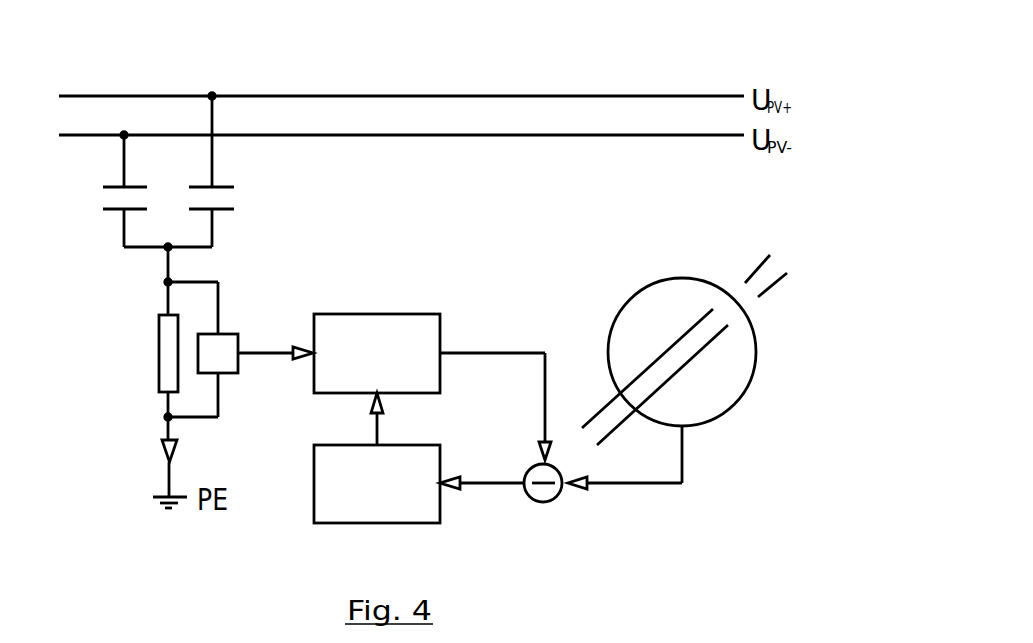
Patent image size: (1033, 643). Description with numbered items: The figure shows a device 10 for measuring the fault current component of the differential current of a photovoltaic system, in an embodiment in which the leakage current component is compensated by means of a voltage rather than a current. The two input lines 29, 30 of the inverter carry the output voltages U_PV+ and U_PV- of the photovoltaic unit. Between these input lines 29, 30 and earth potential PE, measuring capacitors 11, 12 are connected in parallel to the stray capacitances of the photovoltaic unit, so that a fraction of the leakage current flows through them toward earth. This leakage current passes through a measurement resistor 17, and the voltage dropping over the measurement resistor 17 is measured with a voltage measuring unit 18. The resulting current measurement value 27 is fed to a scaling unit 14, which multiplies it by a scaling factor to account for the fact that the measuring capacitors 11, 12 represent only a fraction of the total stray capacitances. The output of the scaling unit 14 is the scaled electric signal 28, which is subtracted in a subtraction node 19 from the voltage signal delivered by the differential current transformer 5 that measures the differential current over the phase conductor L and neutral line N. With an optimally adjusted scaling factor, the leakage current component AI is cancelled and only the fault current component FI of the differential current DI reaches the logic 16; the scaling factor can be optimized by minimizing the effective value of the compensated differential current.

The differential current transformer 5 is at (732, 410).
The device for measuring the fault current component of the differential current 10 is at (485, 243).
The measuring capacitor 11 is at (115, 210).
The measuring capacitor 12 is at (223, 187).
The scaling unit 14 is at (347, 312).
The logic 16 is at (315, 485).
The measurement resistor 17 is at (158, 368).
The voltage measuring unit 18 is at (228, 373).
The subtraction node 19 is at (559, 440).
The current measurement value 27 is at (277, 350).
The scaled electric signal 28 is at (480, 352).
The input line 29 is at (605, 97).
The input line 30 is at (655, 135).